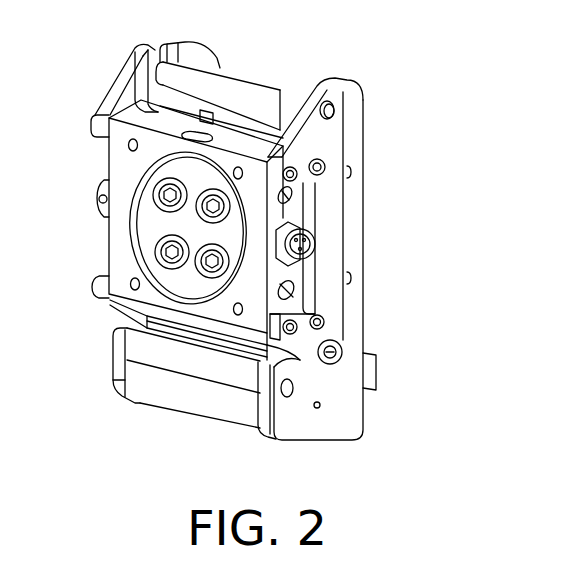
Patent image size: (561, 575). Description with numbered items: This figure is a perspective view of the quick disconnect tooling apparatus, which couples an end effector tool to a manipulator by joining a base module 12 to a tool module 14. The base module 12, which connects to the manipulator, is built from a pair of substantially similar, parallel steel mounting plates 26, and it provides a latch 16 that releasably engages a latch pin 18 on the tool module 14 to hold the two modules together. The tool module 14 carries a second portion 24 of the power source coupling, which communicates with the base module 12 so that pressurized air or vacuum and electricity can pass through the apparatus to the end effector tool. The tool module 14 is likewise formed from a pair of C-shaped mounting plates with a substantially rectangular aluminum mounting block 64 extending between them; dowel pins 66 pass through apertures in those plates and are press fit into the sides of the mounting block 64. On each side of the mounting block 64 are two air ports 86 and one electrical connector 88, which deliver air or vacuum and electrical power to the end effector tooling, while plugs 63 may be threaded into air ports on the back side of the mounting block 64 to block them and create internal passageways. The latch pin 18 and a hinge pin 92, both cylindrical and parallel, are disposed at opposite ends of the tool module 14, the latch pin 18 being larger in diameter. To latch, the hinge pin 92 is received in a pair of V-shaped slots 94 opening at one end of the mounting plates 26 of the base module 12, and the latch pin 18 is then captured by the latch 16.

The base module 12 is at (370, 314).
The tool module 14 is at (108, 238).
The latch 16 is at (183, 409).
The latch pin 18 is at (336, 351).
The second portion 24 is at (160, 262).
The mounting plates 26 is at (118, 80).
The plugs 63 is at (108, 296).
The mounting block 64 is at (115, 157).
The dowel pins 66 is at (317, 160).
The air ports 86 is at (290, 197).
The electrical connectors 88 is at (316, 240).
The hinge pin 92 is at (232, 82).
The V-shaped slots 94 is at (177, 47).